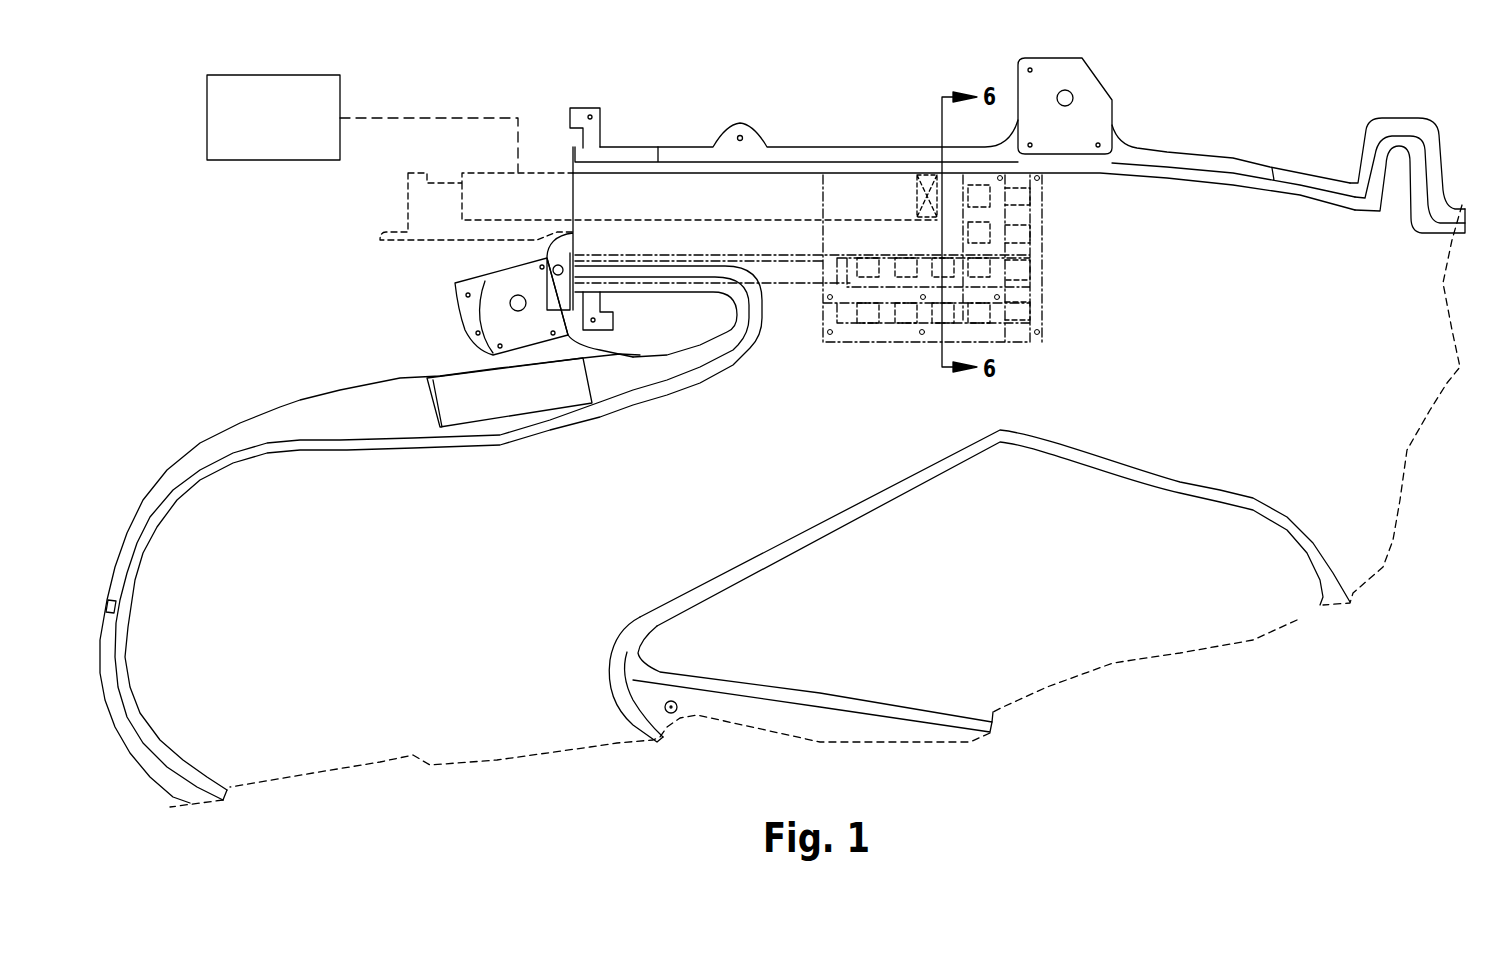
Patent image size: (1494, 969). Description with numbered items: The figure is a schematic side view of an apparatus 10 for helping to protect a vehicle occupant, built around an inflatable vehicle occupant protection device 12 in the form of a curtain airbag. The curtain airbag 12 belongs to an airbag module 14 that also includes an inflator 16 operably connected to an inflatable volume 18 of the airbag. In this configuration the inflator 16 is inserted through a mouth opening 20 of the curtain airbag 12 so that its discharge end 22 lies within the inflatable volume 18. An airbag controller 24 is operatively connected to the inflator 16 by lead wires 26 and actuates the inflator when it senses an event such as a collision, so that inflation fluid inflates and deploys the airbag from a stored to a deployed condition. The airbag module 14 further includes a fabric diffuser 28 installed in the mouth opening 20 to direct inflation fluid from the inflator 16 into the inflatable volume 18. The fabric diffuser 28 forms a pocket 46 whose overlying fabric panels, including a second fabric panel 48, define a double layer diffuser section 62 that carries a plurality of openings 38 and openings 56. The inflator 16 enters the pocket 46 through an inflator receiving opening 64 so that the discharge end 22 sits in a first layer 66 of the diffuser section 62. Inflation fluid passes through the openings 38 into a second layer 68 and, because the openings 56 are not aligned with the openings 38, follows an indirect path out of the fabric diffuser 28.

The apparatus 10 is at (242, 240).
The inflatable vehicle occupant protection device 12 is at (1422, 257).
The airbag module 14 is at (613, 147).
The inflator 16 is at (543, 177).
The inflatable volume 18 is at (1263, 236).
The mouth opening 20 is at (573, 167).
The discharge end 22 is at (927, 173).
The airbag controller 24 is at (207, 121).
The lead wires 26 is at (442, 118).
The fabric diffuser 28 is at (770, 193).
The openings 38 is at (985, 252).
The pocket 46 is at (903, 195).
The second fabric panel 48 is at (1033, 320).
The openings 56 is at (1023, 280).
The diffuser section 62 is at (953, 235).
The inflator receiving opening 64 is at (447, 180).
The first layer 66 is at (1010, 258).
The second layer 68 is at (990, 308).